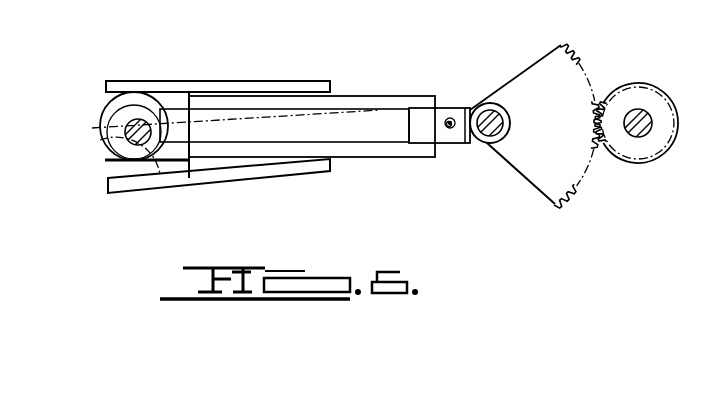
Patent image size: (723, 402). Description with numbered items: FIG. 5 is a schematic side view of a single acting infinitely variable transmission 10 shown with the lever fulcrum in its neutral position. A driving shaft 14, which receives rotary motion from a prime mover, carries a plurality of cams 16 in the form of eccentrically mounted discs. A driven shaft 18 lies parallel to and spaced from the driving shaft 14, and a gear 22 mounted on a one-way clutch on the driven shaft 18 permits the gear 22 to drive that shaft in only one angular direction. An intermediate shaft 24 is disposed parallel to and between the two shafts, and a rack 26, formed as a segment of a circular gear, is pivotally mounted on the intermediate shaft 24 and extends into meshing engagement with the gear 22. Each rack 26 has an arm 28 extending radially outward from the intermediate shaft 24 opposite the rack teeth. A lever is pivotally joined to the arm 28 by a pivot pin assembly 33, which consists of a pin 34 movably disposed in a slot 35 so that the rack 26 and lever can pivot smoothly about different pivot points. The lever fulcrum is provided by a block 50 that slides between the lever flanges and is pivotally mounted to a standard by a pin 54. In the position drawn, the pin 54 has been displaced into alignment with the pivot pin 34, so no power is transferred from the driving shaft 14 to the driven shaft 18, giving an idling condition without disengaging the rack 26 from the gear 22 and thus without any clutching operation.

The infinitely variable transmission 10 is at (336, 62).
The driving shaft 14 is at (142, 120).
The cams 16 is at (103, 136).
The driven shaft 18 is at (646, 113).
The gear 22 is at (632, 95).
The intermediate shaft 24 is at (488, 142).
The rack 26 is at (562, 140).
The arm 28 is at (468, 108).
The pivot pin assembly 33 is at (268, 127).
The pin 34 is at (448, 130).
The slot 35 is at (446, 118).
The block 50 is at (423, 138).
The pin 54 is at (439, 161).